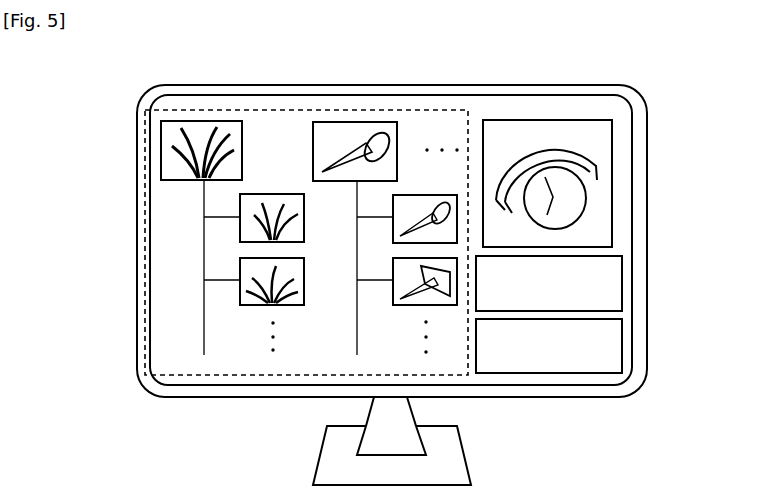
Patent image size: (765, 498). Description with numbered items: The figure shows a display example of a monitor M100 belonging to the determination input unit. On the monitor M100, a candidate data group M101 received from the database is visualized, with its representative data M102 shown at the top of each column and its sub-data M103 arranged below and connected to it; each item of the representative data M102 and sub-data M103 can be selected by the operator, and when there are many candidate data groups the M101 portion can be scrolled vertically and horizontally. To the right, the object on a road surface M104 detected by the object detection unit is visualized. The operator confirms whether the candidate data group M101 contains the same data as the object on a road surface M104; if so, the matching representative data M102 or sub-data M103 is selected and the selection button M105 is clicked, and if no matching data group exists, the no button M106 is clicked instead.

The monitor M100 is at (328, 285).
The candidate data group M101 is at (238, 242).
The representative data M102 is at (125, 150).
The sub-data M103 is at (273, 190).
The object on a road surface M104 is at (614, 183).
The selection button M105 is at (610, 283).
The no button M106 is at (610, 345).